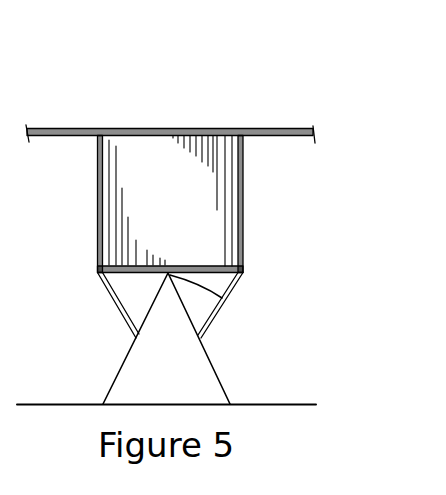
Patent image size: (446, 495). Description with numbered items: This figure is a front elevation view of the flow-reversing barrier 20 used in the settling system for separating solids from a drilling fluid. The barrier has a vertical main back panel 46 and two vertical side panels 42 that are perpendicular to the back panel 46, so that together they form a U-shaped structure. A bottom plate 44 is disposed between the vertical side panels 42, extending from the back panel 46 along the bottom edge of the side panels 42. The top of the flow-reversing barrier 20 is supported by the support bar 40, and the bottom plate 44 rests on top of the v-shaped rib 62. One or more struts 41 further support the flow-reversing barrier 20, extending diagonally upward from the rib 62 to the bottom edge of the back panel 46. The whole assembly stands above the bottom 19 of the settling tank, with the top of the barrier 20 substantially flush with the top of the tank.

The bottom 19 is at (285, 403).
The flow-reversing barrier 20 is at (170, 191).
The support bar 40 is at (67, 128).
The struts 41 is at (110, 301).
The vertical side panels 42 is at (98, 190).
The bottom plate 44 is at (205, 266).
The vertical main back panel 46 is at (181, 180).
The v-shaped rib 62 is at (222, 298).